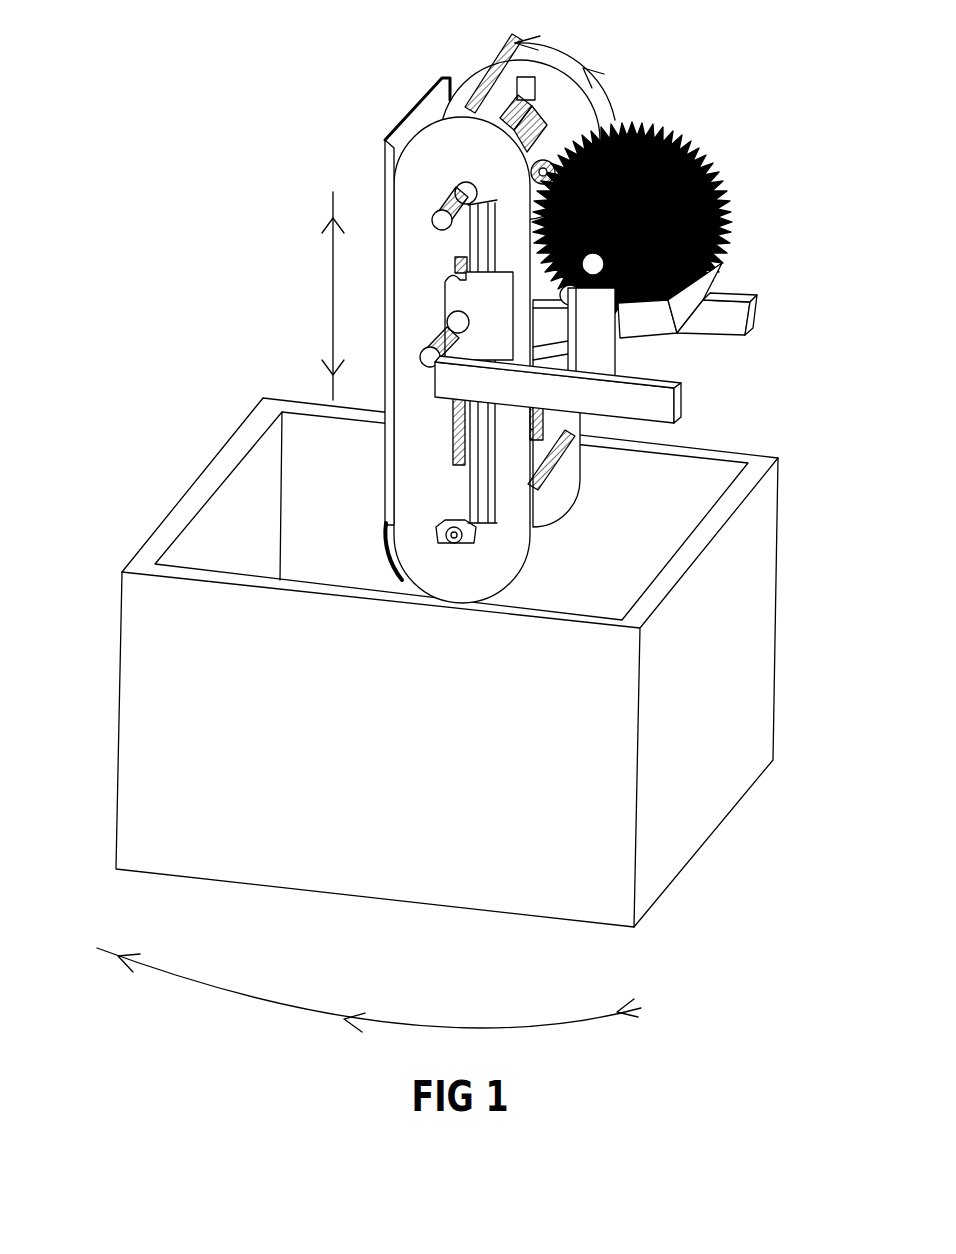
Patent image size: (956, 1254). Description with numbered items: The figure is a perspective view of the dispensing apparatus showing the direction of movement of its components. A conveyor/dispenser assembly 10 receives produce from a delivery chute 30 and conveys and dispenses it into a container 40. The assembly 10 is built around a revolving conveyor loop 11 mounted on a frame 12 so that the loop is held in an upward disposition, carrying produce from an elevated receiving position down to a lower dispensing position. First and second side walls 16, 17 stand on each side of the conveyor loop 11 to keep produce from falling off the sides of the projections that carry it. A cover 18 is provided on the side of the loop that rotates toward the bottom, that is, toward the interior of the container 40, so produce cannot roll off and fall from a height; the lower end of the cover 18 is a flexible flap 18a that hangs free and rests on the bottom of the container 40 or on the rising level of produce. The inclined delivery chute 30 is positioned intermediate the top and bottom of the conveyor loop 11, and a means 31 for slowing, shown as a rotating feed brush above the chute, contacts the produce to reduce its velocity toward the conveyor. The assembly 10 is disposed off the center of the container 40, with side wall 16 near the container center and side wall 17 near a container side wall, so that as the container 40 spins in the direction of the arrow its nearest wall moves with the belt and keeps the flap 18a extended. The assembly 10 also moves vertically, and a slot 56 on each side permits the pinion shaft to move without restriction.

The conveyor/dispenser assembly 10 is at (439, 306).
The revolving conveyor loop 11 is at (527, 118).
The frame 12 is at (683, 405).
The first side wall 16 is at (437, 148).
The second side wall 17 is at (478, 80).
The cover 18 is at (390, 455).
The flap 18a is at (387, 544).
The delivery chute 30 is at (717, 260).
The means for slowing 31 is at (717, 173).
The container 40 is at (754, 714).
The slot 56 is at (455, 425).